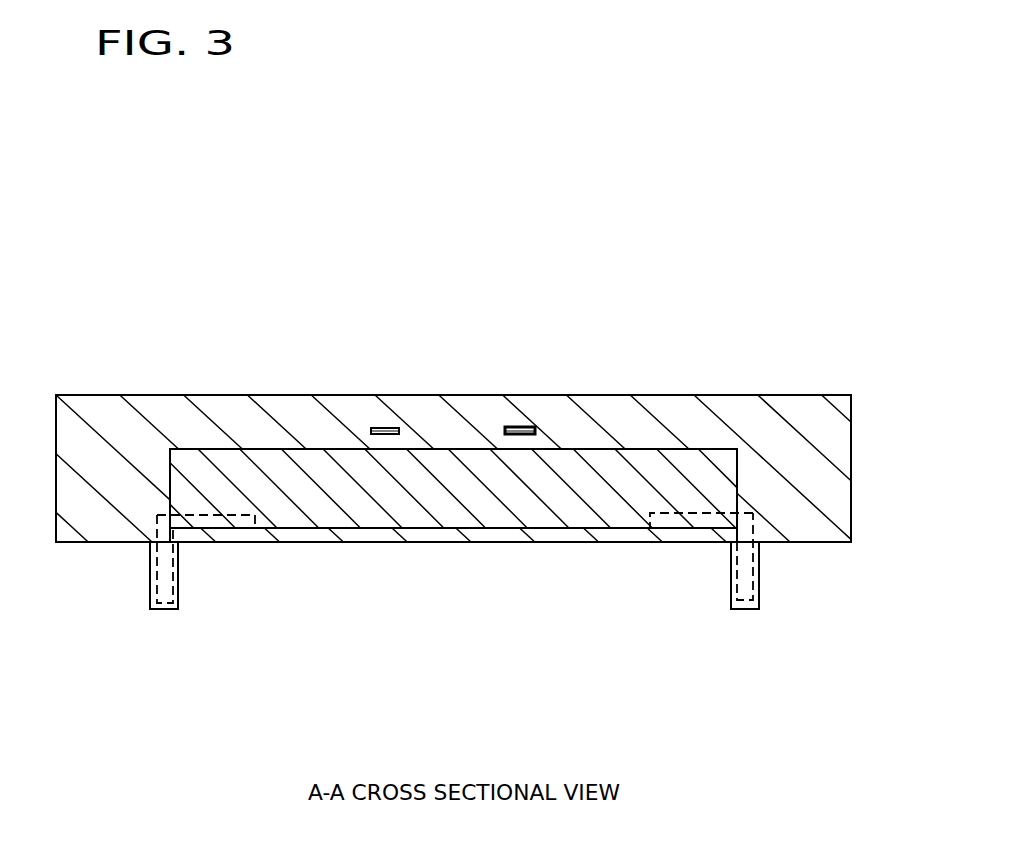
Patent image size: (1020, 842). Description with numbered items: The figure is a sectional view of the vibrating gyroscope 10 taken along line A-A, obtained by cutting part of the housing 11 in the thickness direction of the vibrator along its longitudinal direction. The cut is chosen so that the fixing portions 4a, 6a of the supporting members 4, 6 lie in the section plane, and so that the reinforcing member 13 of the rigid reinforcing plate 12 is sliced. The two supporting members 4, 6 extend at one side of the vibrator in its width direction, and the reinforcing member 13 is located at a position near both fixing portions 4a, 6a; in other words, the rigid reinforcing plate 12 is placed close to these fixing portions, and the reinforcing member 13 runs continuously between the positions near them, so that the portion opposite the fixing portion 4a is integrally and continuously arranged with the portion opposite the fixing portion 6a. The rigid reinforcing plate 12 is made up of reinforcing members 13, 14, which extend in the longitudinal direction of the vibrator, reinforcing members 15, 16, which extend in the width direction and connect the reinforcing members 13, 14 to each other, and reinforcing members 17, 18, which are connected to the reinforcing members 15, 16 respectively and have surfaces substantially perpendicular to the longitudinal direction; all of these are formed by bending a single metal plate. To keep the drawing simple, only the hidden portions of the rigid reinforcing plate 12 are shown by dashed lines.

The vibrating gyroscope 10 is at (112, 345).
The housing 11 is at (795, 418).
The supporting member 4 is at (522, 427).
The fixing portion 4a is at (548, 427).
The supporting member 6 is at (382, 428).
The fixing portion 6a is at (360, 427).
The rigid reinforcing plate 12 is at (454, 598).
The reinforcing member 13 is at (560, 493).
The reinforcing member 14 is at (352, 493).
The reinforcing member 15 is at (670, 527).
The reinforcing member 16 is at (237, 541).
The reinforcing member 17 is at (704, 591).
The reinforcing member 18 is at (157, 560).